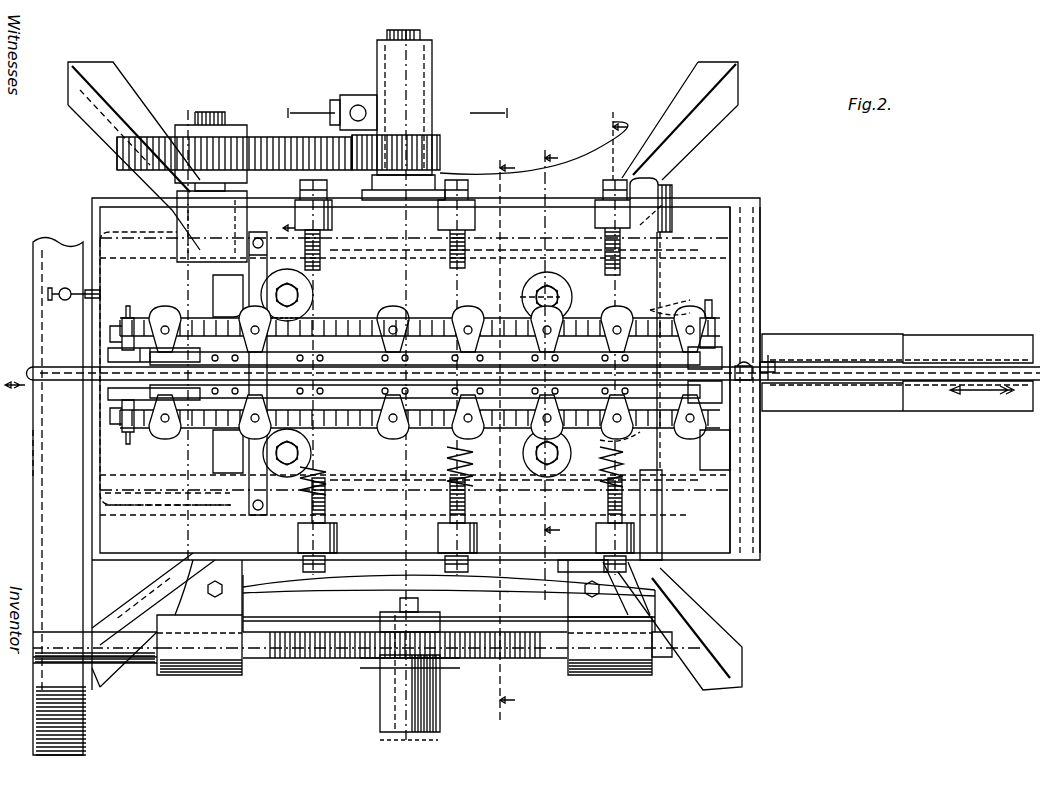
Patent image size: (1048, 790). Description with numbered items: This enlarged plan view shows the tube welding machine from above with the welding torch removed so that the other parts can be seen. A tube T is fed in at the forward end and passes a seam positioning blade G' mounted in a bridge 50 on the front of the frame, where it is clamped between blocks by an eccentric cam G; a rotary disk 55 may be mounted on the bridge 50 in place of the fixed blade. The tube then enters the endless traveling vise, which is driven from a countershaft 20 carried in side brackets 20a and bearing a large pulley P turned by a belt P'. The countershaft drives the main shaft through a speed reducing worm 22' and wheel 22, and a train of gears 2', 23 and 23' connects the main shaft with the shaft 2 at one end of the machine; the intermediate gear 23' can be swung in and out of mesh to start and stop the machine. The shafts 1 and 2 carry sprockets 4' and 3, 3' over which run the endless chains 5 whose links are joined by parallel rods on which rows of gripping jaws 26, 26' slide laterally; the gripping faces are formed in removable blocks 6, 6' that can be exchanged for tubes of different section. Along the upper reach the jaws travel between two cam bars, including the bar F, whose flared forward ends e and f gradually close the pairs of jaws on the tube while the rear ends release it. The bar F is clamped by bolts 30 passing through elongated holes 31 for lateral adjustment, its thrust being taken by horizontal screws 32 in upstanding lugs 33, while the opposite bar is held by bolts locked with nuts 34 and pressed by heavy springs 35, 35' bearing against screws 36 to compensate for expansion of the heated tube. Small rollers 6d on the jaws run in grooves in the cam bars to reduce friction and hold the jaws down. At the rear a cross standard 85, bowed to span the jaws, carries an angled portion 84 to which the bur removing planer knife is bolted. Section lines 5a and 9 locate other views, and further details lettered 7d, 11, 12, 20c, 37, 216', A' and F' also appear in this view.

The shaft 1 is at (650, 185).
The shaft 2 is at (165, 368).
The gear 2' is at (215, 187).
The sprocket 3 is at (346, 431).
The sprocket 3' is at (150, 313).
The sprocket 4' is at (707, 315).
The endless chain 5 is at (612, 662).
The section line 5a— 5a is at (283, 482).
The gripping block 6 is at (449, 366).
The gripping block 6' is at (74, 278).
The roller 6d is at (128, 436).
The lower plate 7d is at (225, 445).
The section line 9— 9 is at (770, 385).
The link bar 11 is at (480, 372).
The section line 12 is at (399, 112).
The countershaft 20 is at (150, 675).
The side bracket 20a is at (620, 675).
The cross bar 20c is at (272, 612).
The worm wheel 22 is at (430, 674).
The speed reducing worm 22' is at (395, 665).
The gear 23 is at (417, 165).
The intermediate gear 23' is at (335, 116).
The gripping jaw 26 is at (420, 387).
The gripping jaw 26' is at (384, 319).
The bolt 30 is at (300, 298).
The elongated hole 31 is at (262, 276).
The horizontal screw 32 is at (322, 250).
The upstanding lug 33 is at (334, 220).
The locking nut 34 is at (248, 310).
The heavy spring 35 is at (461, 485).
The spring 35' is at (589, 484).
The screw 36 is at (296, 508).
The bolt block 37 is at (298, 537).
The bridge 50 is at (760, 290).
The rotary disk 55 is at (612, 432).
The angled portion 84 is at (222, 300).
The cross standard 85 is at (300, 318).
The shaft end 216' is at (430, 738).
The arm A' is at (680, 629).
The cam bar F is at (515, 227).
The frame F' is at (515, 503).
The eccentric cam G is at (768, 346).
The seam positioning blade G' is at (800, 345).
The pulley P is at (96, 497).
The belt P' is at (19, 455).
The tube T is at (950, 368).
The receiving end of cam bar e is at (700, 445).
The receiving end of cam bar f is at (662, 312).